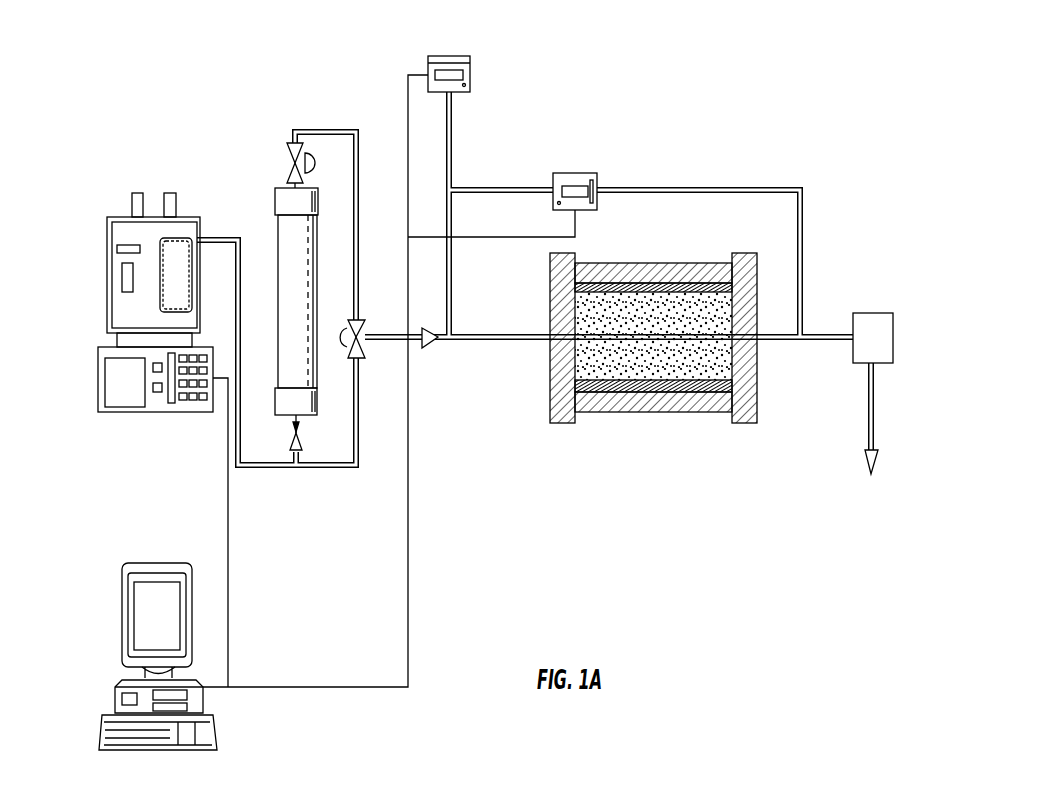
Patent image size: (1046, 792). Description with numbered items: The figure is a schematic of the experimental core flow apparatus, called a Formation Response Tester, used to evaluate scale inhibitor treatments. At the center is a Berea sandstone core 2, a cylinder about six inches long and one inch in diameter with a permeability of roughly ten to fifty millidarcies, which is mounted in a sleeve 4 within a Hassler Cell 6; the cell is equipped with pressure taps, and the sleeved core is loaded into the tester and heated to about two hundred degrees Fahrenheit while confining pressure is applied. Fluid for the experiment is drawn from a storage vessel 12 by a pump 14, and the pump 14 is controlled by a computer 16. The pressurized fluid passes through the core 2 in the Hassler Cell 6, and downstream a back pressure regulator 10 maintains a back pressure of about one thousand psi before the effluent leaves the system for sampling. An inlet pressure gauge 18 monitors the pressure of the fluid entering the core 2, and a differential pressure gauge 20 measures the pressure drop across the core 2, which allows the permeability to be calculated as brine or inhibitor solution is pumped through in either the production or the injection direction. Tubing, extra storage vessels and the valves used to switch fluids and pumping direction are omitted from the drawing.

The Berea sandstone core 2 is at (665, 352).
The sleeve 4 is at (607, 393).
The Hassler Cell 6 is at (742, 382).
The back pressure regulator 10 is at (880, 313).
The storage vessel 12 is at (279, 200).
The pump 14 is at (107, 260).
The computer 16 is at (122, 617).
The inlet pressure gauge 18 is at (458, 56).
The differential pressure gauge 20 is at (585, 173).